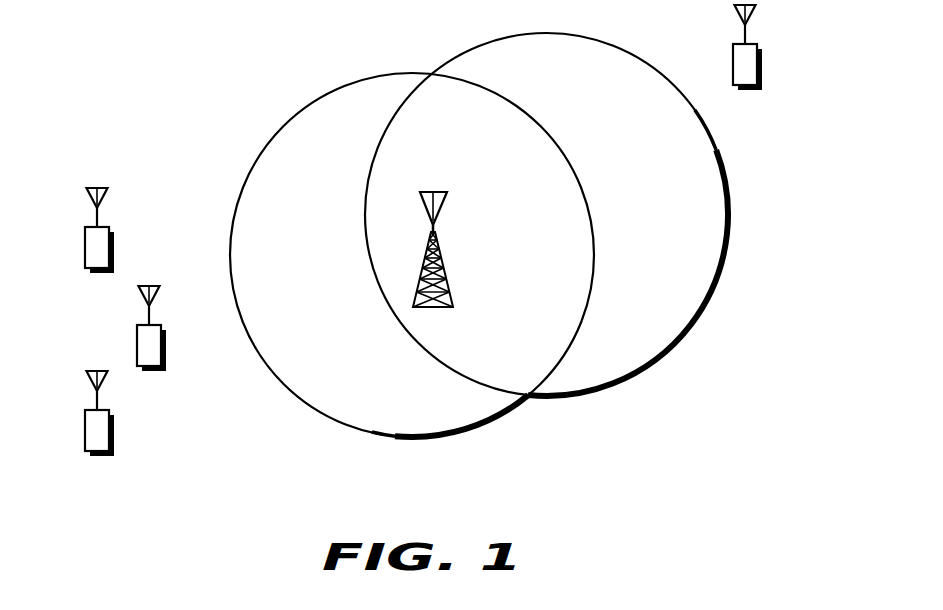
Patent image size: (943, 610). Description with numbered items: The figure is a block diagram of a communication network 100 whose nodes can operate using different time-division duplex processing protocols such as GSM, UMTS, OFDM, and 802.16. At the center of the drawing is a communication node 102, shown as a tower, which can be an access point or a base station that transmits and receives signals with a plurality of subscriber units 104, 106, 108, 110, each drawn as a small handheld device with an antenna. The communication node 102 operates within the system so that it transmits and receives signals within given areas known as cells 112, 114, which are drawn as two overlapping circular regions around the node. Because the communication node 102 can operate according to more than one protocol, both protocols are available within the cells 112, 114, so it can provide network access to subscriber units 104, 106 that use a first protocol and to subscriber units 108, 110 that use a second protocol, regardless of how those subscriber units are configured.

The communication network 100 is at (438, 517).
The communication node 102 is at (447, 268).
The subscriber unit 104 is at (127, 230).
The subscriber unit 106 is at (179, 328).
The subscriber unit 108 is at (127, 413).
The subscriber unit 110 is at (775, 47).
The cell 112 is at (450, 416).
The cell 114 is at (628, 253).